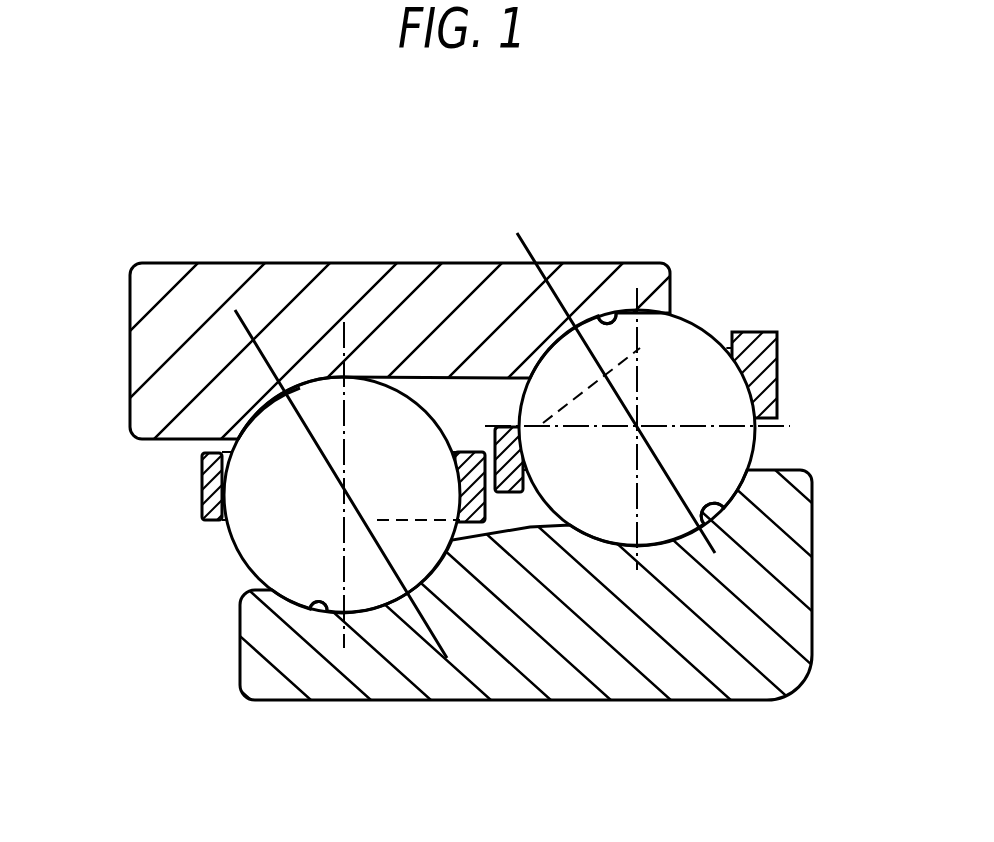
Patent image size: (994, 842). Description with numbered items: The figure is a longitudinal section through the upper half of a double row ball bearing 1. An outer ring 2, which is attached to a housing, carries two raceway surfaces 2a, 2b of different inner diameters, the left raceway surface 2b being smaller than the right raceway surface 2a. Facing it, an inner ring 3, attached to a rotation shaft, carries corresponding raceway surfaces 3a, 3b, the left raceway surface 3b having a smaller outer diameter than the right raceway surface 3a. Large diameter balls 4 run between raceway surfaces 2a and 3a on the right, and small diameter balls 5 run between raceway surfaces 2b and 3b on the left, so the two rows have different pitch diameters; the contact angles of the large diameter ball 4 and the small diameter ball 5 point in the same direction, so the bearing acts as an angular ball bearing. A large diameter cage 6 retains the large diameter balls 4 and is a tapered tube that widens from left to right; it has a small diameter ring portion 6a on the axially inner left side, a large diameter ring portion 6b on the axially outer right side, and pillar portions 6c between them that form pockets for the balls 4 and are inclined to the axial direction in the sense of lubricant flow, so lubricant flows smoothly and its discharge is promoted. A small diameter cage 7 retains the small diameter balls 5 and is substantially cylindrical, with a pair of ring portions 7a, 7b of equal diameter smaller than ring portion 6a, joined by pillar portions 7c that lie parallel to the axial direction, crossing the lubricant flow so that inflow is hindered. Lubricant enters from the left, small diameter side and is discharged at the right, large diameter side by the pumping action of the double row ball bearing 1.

The double row ball bearing 1 is at (757, 226).
The outer ring 2 is at (473, 421).
The raceway surface of outer ring 2a is at (614, 308).
The raceway surface of outer ring 2b is at (293, 392).
The inner ring 3 is at (497, 421).
The raceway surface of inner ring 3a is at (727, 505).
The raceway surface of inner ring 3b is at (308, 600).
The large diameter ball 4 is at (740, 455).
The small diameter ball 5 is at (265, 548).
The large diameter cage 6 is at (497, 421).
The small diameter ring portion 6a is at (505, 428).
The large diameter ring portion 6b is at (760, 332).
The pillar portion 6c is at (592, 395).
The small diameter cage 7 is at (497, 421).
The ring portion 7a is at (205, 526).
The ring portion 7b is at (470, 525).
The pillar portion 7c is at (377, 520).